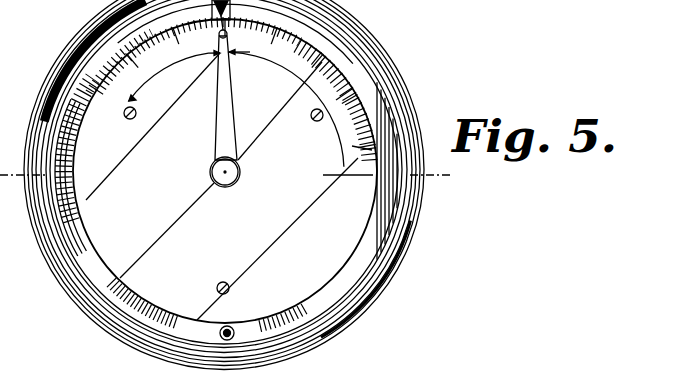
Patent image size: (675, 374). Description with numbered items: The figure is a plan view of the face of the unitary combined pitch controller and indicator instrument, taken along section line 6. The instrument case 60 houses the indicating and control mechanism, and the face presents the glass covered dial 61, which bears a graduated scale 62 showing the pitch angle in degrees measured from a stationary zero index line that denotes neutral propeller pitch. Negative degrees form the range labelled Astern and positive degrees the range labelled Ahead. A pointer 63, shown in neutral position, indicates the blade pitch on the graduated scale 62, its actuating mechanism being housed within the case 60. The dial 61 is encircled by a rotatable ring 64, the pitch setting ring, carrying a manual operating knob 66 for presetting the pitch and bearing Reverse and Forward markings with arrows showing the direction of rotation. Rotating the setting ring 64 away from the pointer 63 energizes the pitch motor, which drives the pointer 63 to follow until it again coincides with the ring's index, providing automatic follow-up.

The instrument case 60 is at (342, 21).
The glass covered dial 61 is at (282, 181).
The graduated scale 62 is at (242, 172).
The pointer 63 is at (227, 107).
The rotatable ring 64 is at (67, 140).
The manual operating knob 66 is at (231, 327).
The section line 6- 6 is at (4, 152).